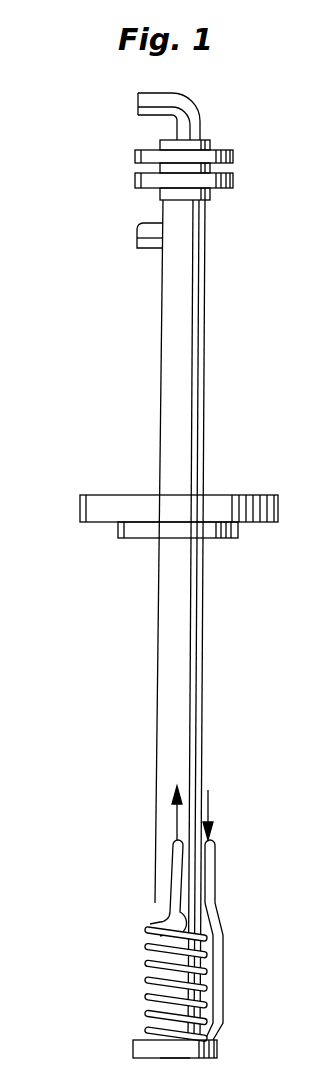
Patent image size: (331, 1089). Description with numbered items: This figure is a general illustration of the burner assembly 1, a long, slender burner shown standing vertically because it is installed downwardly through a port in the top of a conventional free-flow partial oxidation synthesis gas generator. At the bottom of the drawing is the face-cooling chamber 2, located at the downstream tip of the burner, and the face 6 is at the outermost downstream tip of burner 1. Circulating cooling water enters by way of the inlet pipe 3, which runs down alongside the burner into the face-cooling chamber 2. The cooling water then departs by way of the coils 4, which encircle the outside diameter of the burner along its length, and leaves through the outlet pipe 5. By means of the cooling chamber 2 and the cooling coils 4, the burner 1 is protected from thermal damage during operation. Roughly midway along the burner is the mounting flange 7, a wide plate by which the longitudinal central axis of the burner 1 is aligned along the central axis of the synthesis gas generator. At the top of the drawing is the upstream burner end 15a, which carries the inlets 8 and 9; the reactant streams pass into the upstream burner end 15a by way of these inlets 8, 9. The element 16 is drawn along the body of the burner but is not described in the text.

The burner assembly 1 is at (188, 648).
The face-cooling chamber 2 is at (218, 1050).
The inlet pipe 3 is at (215, 868).
The cooling coils 4 is at (147, 976).
The outlet pipe 5 is at (174, 858).
The face 6 is at (171, 1061).
The mounting flange 7 is at (229, 497).
The inlet 8 is at (132, 247).
The inlet 9 is at (136, 99).
The upstream burner end 15a is at (199, 143).
The central rod 16 is at (197, 245).